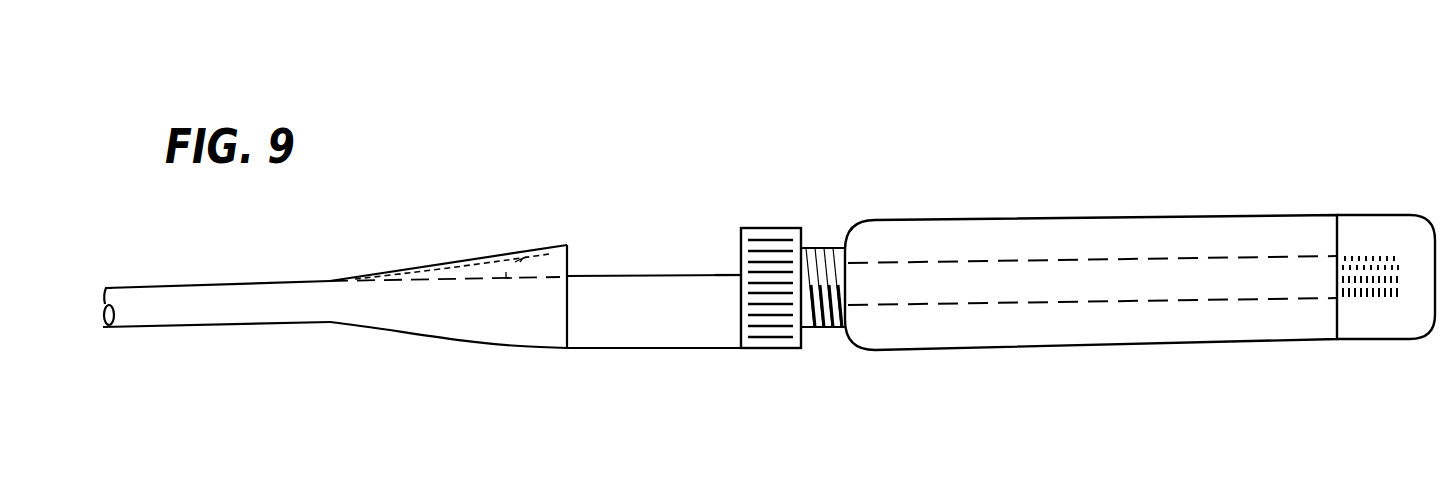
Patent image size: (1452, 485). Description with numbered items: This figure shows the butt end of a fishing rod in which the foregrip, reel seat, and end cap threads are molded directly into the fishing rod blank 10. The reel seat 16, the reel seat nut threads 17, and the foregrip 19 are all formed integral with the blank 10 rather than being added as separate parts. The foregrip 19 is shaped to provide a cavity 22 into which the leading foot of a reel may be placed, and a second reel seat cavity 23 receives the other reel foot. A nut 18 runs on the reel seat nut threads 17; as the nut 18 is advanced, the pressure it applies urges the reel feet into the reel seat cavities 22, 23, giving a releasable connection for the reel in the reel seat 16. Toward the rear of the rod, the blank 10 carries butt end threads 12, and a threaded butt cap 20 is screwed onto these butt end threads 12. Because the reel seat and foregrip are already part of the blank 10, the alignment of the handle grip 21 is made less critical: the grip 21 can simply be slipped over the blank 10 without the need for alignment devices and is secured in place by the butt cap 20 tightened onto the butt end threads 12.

The fishing rod blank 10 is at (200, 329).
The butt end threads 12 is at (1372, 300).
The reel seat 16 is at (655, 275).
The reel seat nut threads 17 is at (828, 290).
The nut 18 is at (768, 228).
The foregrip 19 is at (501, 254).
The threaded butt cap 20 is at (1352, 215).
The handle grip 21 is at (947, 221).
The cavity 22 is at (576, 253).
The reel seat cavity 23 is at (728, 249).